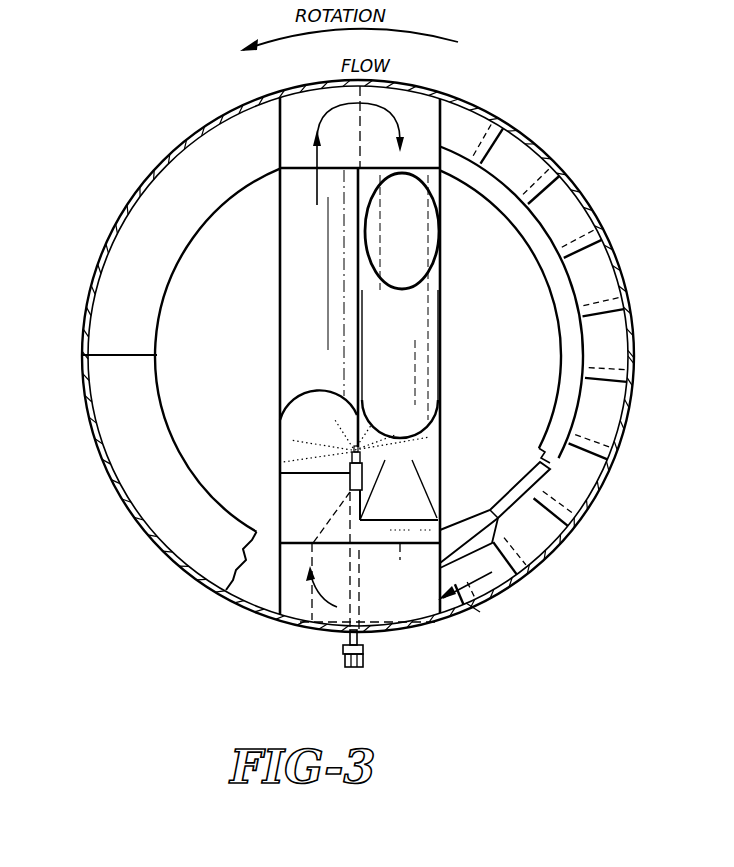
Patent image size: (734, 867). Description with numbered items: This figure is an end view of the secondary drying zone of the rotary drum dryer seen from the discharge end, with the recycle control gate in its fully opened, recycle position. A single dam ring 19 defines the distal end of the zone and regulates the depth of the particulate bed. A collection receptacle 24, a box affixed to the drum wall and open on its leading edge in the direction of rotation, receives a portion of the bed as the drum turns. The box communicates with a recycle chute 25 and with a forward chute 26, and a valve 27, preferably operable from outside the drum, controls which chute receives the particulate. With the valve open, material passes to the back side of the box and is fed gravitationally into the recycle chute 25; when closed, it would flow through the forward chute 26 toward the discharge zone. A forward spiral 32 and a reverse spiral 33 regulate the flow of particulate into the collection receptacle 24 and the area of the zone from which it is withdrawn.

The dam ring 19 is at (157, 399).
The collection receptacle 24 is at (287, 582).
The recycle chute 25 is at (278, 330).
The forward chute 26 is at (422, 377).
The valve 27 is at (325, 608).
The forward spiral 32 is at (586, 273).
The reverse spiral 33 is at (503, 495).